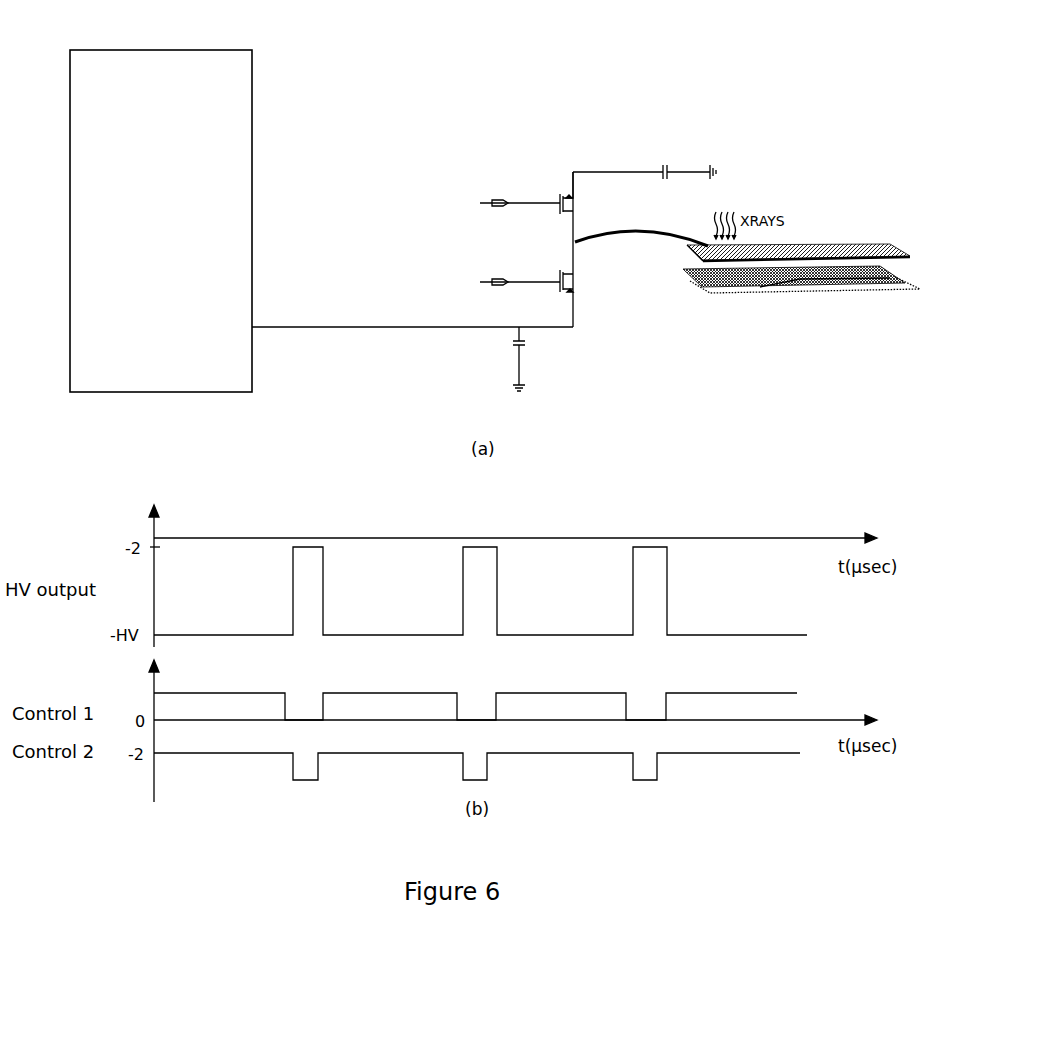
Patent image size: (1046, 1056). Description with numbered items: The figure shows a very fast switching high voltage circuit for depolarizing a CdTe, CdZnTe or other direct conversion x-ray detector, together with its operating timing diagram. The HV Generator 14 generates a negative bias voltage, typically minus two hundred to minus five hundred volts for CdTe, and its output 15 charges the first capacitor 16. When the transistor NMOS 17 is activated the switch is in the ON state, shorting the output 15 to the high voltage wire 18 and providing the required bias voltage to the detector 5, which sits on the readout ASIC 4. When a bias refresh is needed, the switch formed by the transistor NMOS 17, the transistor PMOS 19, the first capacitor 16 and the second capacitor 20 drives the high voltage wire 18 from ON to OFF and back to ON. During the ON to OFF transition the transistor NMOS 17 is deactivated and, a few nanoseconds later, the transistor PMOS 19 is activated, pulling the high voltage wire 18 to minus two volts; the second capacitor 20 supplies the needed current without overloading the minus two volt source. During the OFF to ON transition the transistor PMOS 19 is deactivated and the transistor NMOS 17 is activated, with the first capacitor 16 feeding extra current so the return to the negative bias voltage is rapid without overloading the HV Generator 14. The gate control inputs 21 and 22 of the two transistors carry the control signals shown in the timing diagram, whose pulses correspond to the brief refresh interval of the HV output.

The readout ASIC 4 is at (808, 290).
The detector 5 is at (812, 247).
The HV Generator 14 is at (252, 50).
The output 15 is at (290, 327).
The capacitor C1 16 is at (522, 347).
The transistor NMOS 17 is at (590, 290).
The high voltage wire 18 is at (600, 238).
The transistor PMOS 19 is at (630, 202).
The capacitor C2 20 is at (670, 165).
The control 2 input 21 is at (482, 203).
The control 1 input 22 is at (482, 280).